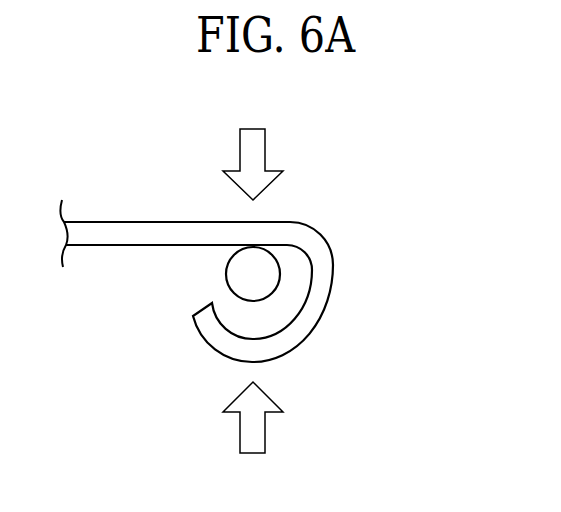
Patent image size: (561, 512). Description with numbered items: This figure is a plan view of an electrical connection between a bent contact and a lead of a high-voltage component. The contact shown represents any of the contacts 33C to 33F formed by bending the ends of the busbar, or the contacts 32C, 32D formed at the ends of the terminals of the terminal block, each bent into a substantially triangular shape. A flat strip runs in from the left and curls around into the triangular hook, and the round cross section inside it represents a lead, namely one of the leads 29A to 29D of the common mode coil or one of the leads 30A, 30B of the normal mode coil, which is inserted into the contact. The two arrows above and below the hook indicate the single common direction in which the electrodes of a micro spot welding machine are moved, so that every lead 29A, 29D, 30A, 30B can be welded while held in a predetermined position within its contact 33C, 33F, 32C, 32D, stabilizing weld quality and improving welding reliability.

The input lead of the common mode coil 29A is at (372, 264).
The output lead of the common mode coil 29D is at (372, 264).
The lead of the normal mode coil 30A is at (372, 264).
The lead of the normal mode coil 30B is at (263, 268).
The contact 33C is at (262, 333).
The contact 33F is at (262, 333).
The contact 32C is at (262, 333).
The contact 32D is at (275, 350).